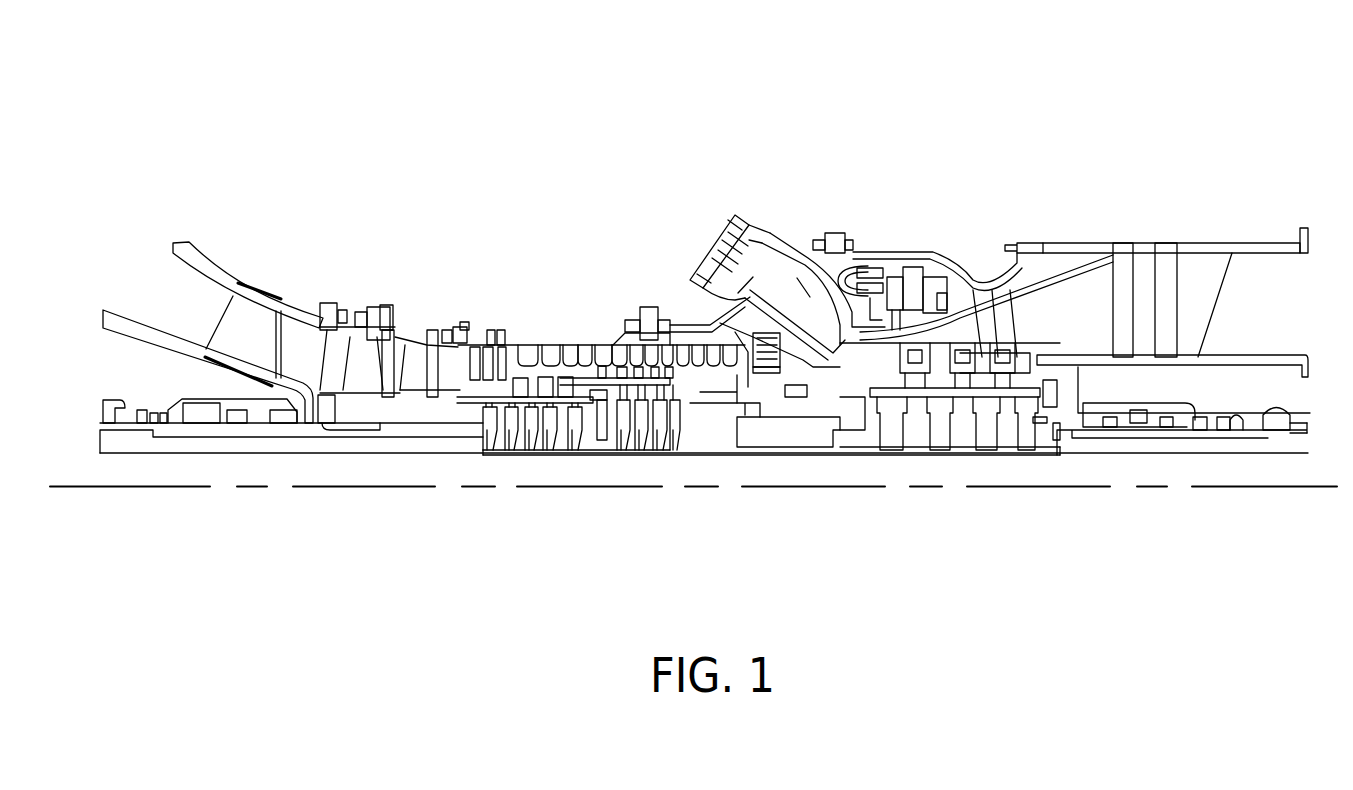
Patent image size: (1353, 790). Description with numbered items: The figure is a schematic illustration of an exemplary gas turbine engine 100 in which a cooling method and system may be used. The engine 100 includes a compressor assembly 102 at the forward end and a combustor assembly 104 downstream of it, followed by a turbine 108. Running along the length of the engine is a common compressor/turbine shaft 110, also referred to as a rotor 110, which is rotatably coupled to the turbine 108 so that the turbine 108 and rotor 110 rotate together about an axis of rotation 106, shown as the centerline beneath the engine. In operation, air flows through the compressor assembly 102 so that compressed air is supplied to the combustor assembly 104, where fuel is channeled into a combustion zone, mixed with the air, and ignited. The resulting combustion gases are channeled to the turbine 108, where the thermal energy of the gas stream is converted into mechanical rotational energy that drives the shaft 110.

The gas turbine engine 100 is at (330, 100).
The compressor assembly 102 is at (459, 330).
The combustor assembly 104 is at (825, 172).
The axis of rotation 106 is at (920, 508).
The turbine 108 is at (973, 278).
The common compressor/turbine shaft 110 is at (508, 478).